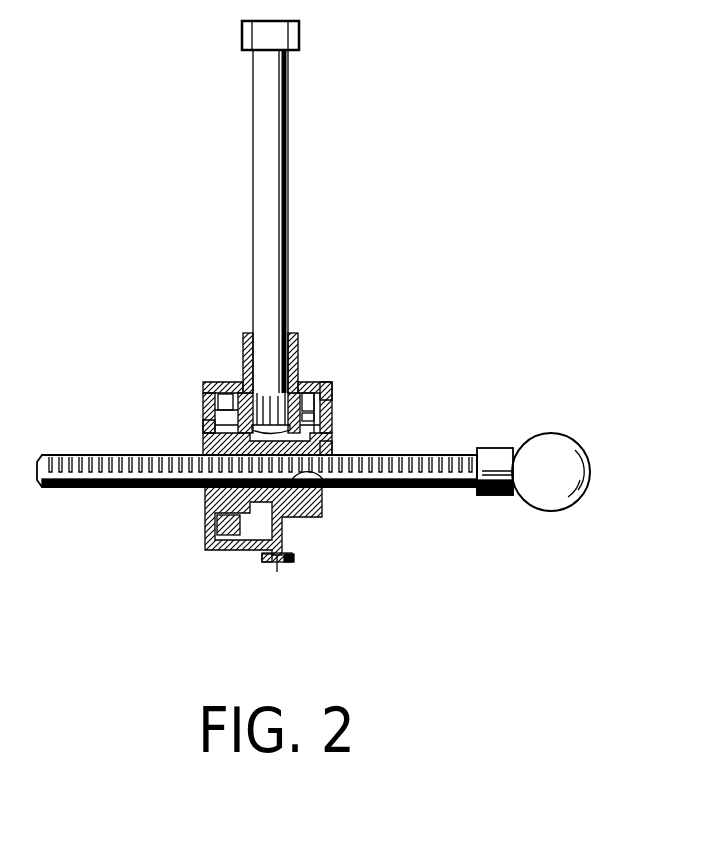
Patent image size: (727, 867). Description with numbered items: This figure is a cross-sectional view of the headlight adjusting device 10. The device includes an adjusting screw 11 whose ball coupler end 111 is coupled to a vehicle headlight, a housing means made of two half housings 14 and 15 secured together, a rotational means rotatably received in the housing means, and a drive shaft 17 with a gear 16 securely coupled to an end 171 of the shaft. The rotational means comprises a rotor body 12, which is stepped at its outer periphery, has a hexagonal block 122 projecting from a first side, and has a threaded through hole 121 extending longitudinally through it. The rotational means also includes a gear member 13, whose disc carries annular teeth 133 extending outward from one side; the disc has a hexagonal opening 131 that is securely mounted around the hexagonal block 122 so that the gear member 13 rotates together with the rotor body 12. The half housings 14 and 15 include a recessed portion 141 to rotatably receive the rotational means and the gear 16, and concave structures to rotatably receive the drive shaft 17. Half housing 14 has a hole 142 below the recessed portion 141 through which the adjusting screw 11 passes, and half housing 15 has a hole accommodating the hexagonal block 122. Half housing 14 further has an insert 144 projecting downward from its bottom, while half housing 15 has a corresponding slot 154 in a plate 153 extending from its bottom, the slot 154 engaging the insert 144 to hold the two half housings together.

The headlight adjusting device 10 is at (463, 286).
The adjusting screw 11 is at (441, 449).
The ball coupler end 111 is at (565, 432).
The rotor body 12 is at (205, 497).
The threaded through hole 121 is at (333, 490).
The hexagonal block 122 is at (170, 488).
The gear member 13 is at (207, 405).
The hexagonal opening 131 is at (205, 432).
The annular teeth 133 is at (236, 383).
The half housing 14 is at (315, 383).
The recessed portion 141 is at (332, 407).
The hole 142 is at (333, 455).
The insert 144 is at (278, 572).
The half housing 15 is at (209, 383).
The plate 153 is at (292, 556).
The slot 154 is at (262, 558).
The gear 16 is at (334, 388).
The drive shaft 17 is at (278, 228).
The end 171 is at (300, 347).